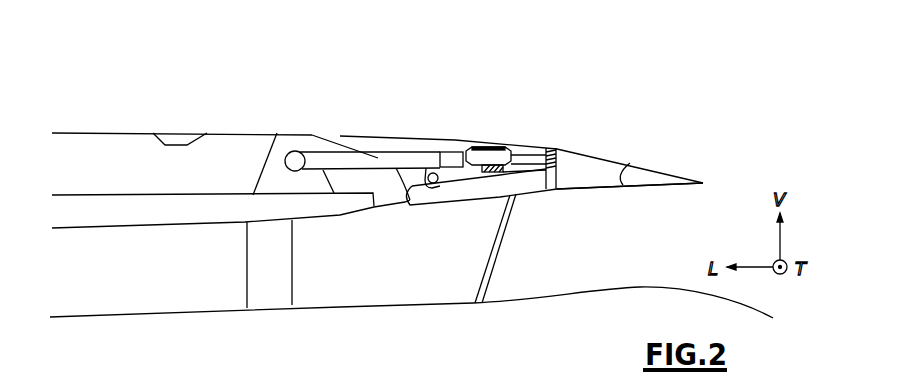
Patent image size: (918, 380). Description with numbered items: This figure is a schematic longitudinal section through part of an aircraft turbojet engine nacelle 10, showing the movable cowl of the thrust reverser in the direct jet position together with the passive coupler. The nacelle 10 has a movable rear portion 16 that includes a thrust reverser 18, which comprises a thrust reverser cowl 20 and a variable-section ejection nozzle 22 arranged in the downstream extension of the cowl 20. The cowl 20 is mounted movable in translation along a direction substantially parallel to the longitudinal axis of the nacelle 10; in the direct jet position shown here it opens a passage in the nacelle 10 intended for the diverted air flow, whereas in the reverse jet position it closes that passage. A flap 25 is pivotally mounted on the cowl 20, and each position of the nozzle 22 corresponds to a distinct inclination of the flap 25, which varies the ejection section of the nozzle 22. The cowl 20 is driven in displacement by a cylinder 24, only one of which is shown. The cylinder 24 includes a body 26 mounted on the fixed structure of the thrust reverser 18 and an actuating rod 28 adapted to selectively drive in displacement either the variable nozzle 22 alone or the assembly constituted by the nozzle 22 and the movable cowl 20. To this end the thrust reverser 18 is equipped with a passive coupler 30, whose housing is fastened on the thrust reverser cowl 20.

The turbojet engine nacelle 10 is at (165, 107).
The movable rear portion 16 is at (625, 93).
The thrust reverser 18 is at (402, 112).
The thrust reverser cowl 20 is at (430, 138).
The variable-section ejection nozzle 22 is at (612, 158).
The cylinder 24 is at (328, 143).
The flap 25 is at (681, 171).
The body 26 is at (373, 148).
The actuating rod 28 is at (450, 154).
The passive coupler 30 is at (502, 146).